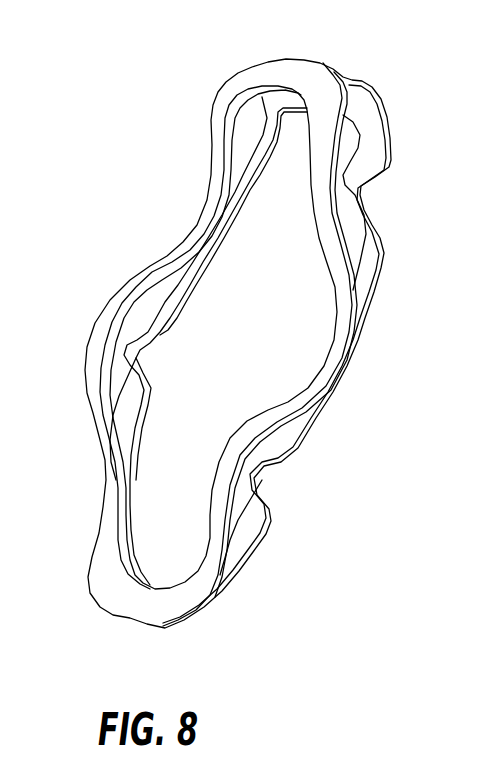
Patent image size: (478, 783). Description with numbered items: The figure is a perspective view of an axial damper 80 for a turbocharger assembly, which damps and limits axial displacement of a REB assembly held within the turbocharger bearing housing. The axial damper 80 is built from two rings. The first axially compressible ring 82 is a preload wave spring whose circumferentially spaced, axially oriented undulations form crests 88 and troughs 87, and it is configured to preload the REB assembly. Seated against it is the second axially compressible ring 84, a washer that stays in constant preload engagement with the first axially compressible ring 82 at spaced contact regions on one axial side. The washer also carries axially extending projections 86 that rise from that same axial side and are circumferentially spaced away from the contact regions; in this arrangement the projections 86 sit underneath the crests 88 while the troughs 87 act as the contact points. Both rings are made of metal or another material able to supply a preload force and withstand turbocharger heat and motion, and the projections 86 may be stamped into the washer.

The axial damper 80 is at (141, 46).
The first axially compressible ring 82 is at (302, 80).
The second axially compressible ring 84 is at (383, 257).
The axially extending projections 86 is at (363, 183).
The troughs 87 is at (338, 343).
The crests 88 is at (97, 329).